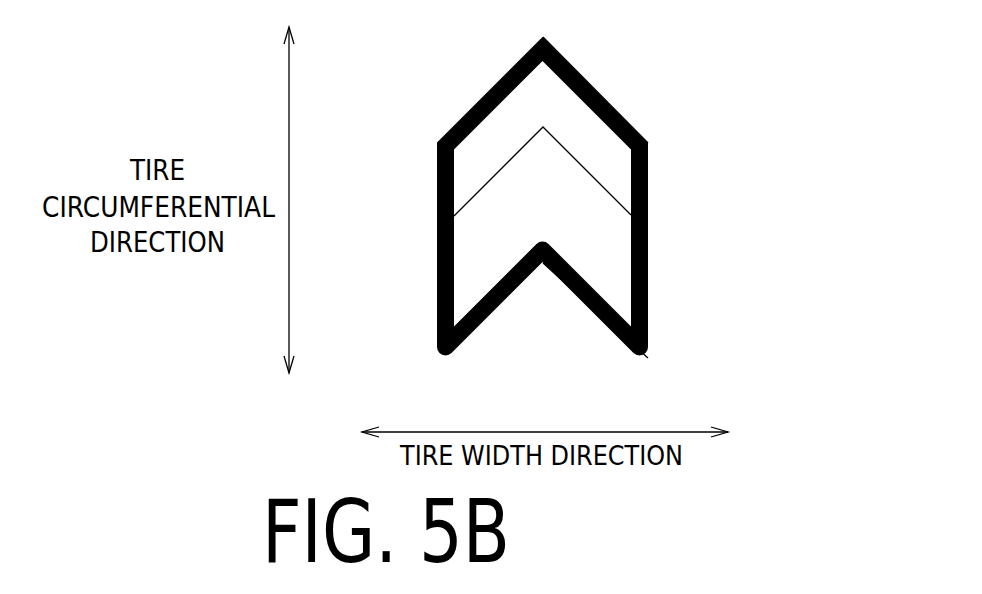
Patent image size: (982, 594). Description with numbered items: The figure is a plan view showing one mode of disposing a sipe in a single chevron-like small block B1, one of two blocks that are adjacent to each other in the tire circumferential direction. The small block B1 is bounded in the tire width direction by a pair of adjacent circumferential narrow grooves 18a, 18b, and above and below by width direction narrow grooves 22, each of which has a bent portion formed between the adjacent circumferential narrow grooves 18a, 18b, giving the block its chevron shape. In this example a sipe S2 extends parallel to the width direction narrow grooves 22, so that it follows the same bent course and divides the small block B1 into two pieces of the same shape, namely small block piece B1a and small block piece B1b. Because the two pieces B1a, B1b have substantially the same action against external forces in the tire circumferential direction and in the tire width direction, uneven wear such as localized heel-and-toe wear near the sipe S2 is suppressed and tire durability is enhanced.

The small block B1 is at (478, 198).
The small block piece B1a is at (473, 157).
The small block piece B1b is at (475, 237).
The sipe S2 is at (603, 183).
The circumferential narrow groove 18a is at (437, 295).
The circumferential narrow groove 18b is at (648, 268).
The width direction narrow groove 22 is at (607, 95).